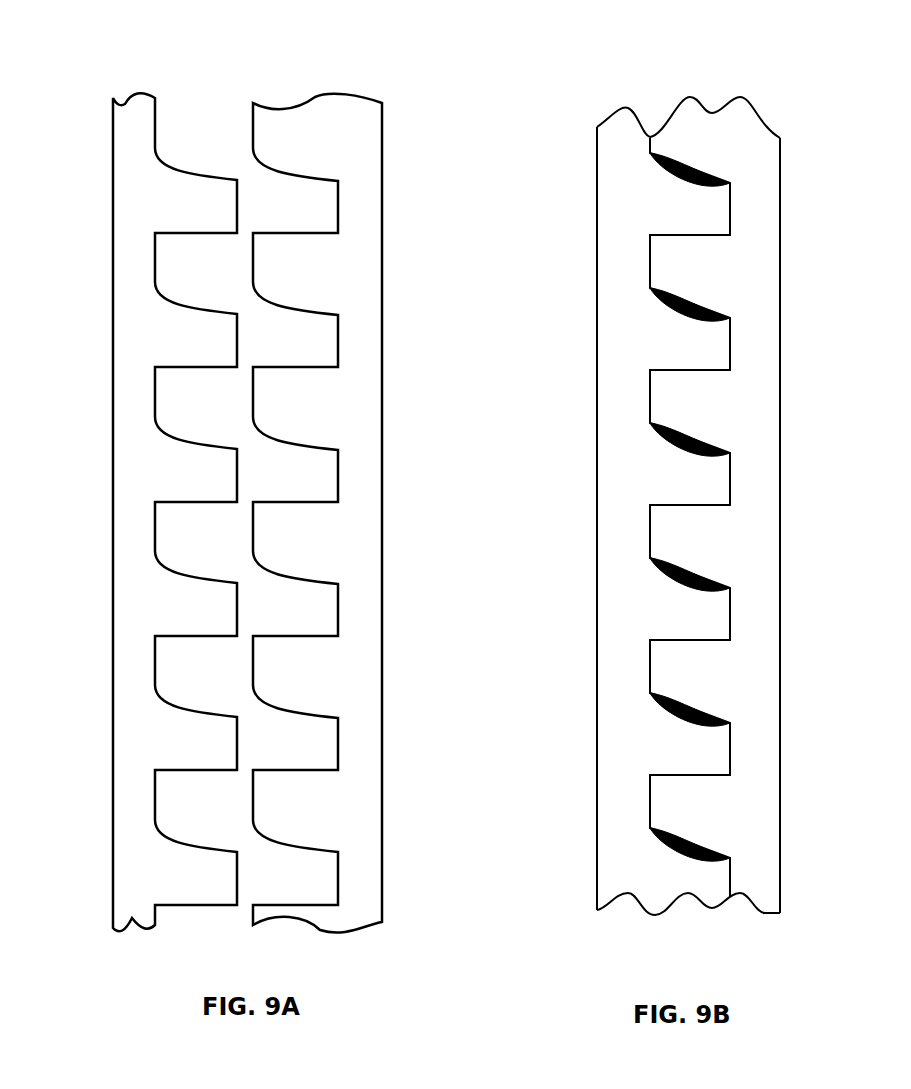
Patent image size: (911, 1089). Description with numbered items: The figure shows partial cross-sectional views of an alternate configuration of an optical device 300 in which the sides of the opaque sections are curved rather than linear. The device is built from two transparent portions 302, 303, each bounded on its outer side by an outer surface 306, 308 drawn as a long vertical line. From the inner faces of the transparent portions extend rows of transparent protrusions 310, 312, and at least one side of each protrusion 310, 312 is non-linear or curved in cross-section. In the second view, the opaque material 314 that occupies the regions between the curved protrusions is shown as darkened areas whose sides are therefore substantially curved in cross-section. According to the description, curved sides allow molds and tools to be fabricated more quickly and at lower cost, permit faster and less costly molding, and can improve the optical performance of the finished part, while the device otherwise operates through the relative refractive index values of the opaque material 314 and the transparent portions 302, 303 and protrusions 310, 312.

In FIG. 9B, the optical device 300 is at (753, 100).
In FIG. 9A, the transparent portion 302 is at (357, 212).
In FIG. 9B, the transparent portion 302 is at (760, 393).
In FIG. 9A, the transparent portion 303 is at (135, 179).
In FIG. 9B, the transparent portion 303 is at (620, 399).
In FIG. 9A, the outer surface of transparent portion 306 is at (381, 771).
In FIG. 9B, the outer surface of transparent portion 306 is at (783, 581).
In FIG. 9A, the outer surface of transparent portion 308 is at (112, 566).
In FIG. 9B, the outer surface of transparent portion 308 is at (597, 703).
In FIG. 9A, the transparent protrusion 310 is at (303, 403).
In FIG. 9B, the transparent protrusion 310 is at (688, 536).
In FIG. 9A, the transparent protrusion 312 is at (198, 341).
In FIG. 9B, the transparent protrusion 312 is at (663, 461).
In FIG. 9B, the opaque material 314 is at (691, 155).